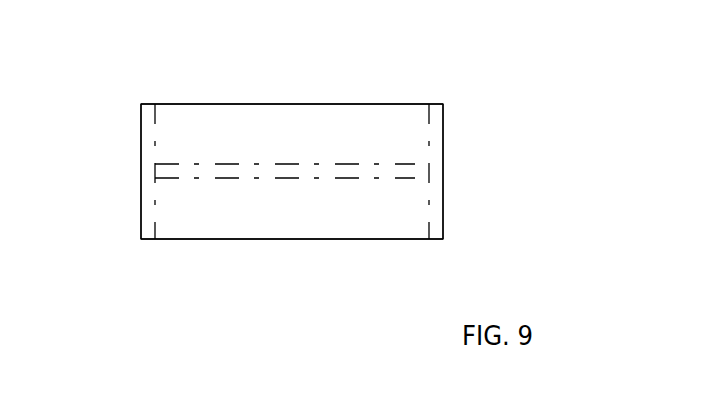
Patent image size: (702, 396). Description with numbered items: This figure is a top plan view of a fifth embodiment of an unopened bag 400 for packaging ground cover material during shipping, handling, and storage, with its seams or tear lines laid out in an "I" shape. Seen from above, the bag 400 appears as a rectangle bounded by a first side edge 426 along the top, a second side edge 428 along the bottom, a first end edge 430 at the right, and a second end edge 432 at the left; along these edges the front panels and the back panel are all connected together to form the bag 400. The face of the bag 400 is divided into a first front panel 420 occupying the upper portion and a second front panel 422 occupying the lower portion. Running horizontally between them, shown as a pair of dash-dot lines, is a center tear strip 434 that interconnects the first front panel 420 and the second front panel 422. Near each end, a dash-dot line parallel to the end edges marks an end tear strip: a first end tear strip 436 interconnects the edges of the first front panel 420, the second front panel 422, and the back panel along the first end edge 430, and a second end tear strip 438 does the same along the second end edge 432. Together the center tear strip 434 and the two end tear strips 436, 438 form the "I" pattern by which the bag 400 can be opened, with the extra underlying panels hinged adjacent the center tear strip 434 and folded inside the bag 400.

The bag 400 is at (483, 90).
The first front panel 420 is at (213, 122).
The second front panel 422 is at (221, 213).
The first side edge 426 is at (293, 104).
The second side edge 428 is at (308, 239).
The first end edge 430 is at (443, 126).
The second end edge 432 is at (141, 142).
The center tear strip 434 is at (349, 168).
The first end tear strip 436 is at (435, 206).
The second end tear strip 438 is at (150, 205).